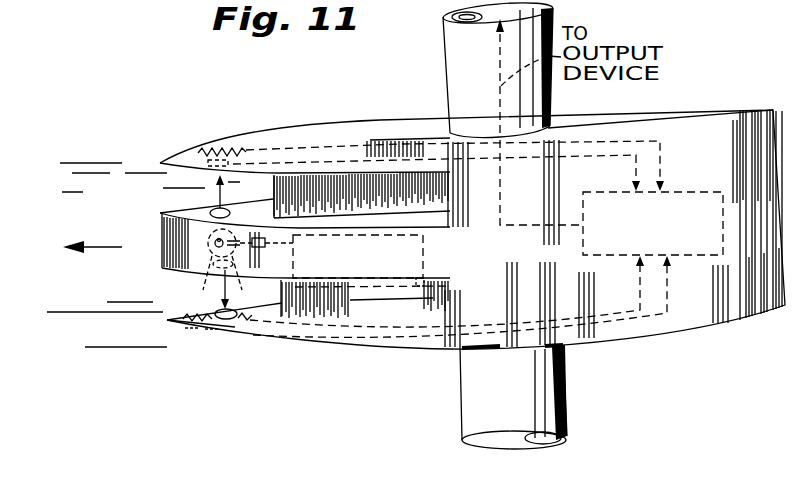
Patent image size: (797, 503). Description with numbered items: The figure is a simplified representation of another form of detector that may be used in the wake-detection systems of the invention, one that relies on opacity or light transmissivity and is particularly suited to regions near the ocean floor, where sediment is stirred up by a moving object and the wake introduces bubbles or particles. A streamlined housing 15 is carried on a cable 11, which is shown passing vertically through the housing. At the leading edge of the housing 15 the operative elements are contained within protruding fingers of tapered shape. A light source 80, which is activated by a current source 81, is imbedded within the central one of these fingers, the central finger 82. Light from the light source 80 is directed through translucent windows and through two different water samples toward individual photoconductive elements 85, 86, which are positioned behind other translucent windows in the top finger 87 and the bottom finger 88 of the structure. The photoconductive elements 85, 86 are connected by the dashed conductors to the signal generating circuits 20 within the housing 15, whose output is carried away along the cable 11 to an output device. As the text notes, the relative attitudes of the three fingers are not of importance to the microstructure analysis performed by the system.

The cable 11 is at (567, 396).
The streamlined housing 15 is at (721, 110).
The signal generating circuits 20 is at (676, 191).
The light source 80 is at (190, 277).
The current source 81 is at (379, 286).
The central finger 82 is at (172, 213).
The photoconductive element 85 is at (198, 101).
The photoconductive element 86 is at (214, 335).
The top finger 87 is at (171, 157).
The bottom finger 88 is at (177, 321).